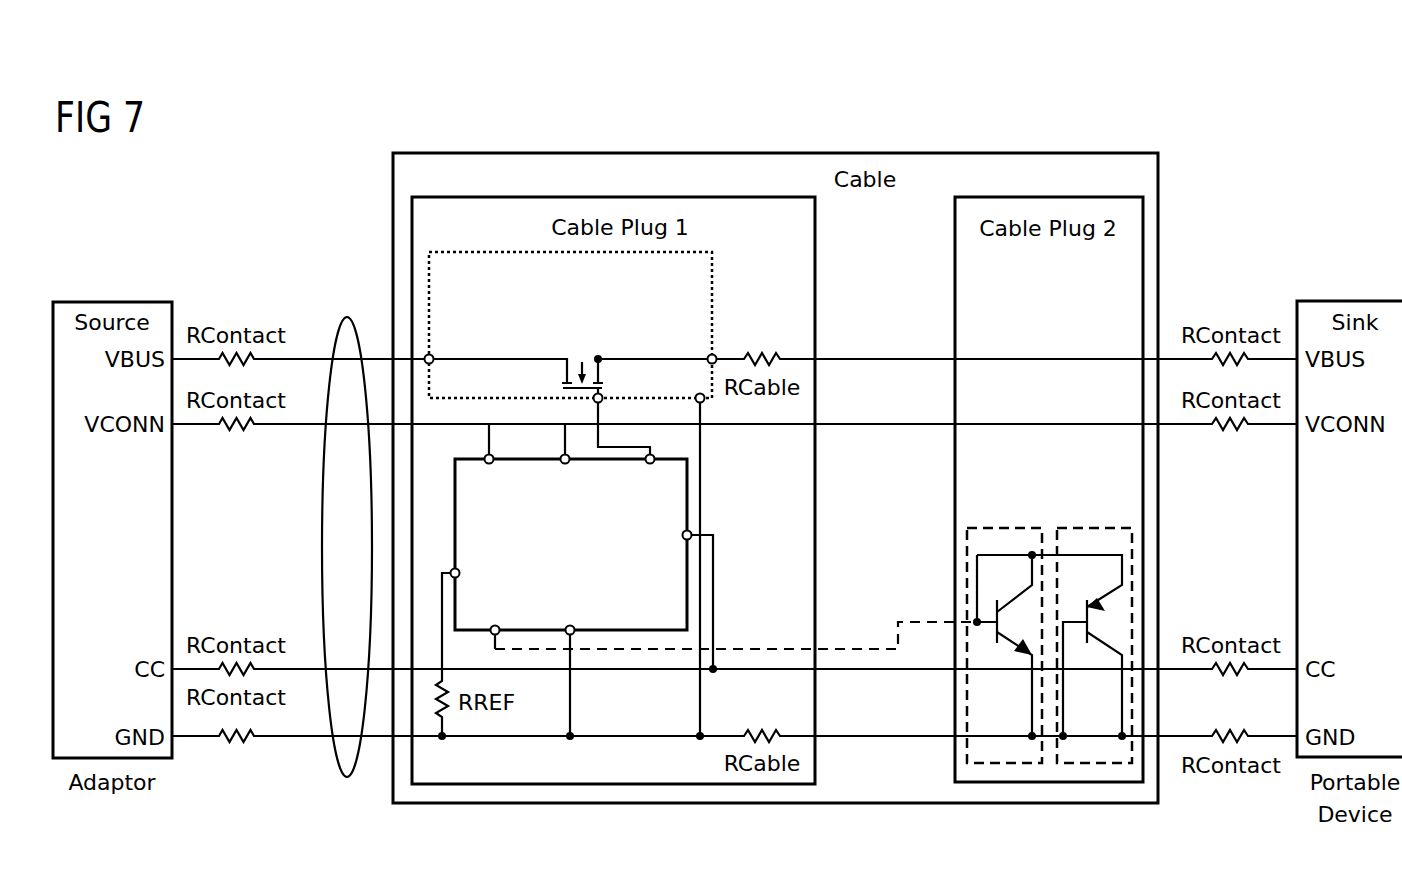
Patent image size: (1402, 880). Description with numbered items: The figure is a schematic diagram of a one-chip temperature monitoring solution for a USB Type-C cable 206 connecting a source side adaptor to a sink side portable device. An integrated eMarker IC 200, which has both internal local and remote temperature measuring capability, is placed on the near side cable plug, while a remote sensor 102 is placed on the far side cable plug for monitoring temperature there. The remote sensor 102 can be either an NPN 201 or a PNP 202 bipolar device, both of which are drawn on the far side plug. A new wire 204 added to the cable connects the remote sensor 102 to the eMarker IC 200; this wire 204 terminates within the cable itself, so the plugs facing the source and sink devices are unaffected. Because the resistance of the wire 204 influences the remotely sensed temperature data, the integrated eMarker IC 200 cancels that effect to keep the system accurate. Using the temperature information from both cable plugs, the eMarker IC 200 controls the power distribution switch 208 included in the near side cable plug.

The remote sensor 102 is at (1049, 606).
The integrated eMarker IC 200 is at (687, 505).
The NPN bipolar device 201 is at (995, 532).
The PNP bipolar device 202 is at (1085, 532).
The wire 204 is at (832, 650).
The USB Type-C cable 206 is at (347, 318).
The power distribution switch 208 is at (712, 300).